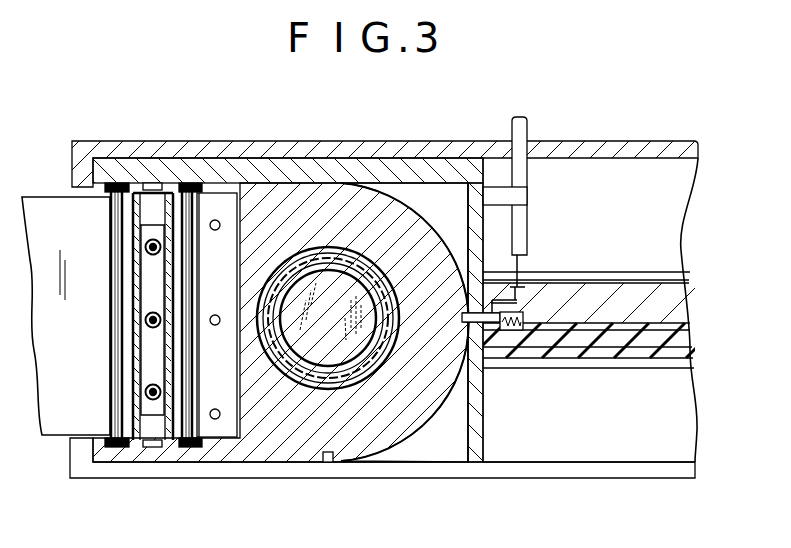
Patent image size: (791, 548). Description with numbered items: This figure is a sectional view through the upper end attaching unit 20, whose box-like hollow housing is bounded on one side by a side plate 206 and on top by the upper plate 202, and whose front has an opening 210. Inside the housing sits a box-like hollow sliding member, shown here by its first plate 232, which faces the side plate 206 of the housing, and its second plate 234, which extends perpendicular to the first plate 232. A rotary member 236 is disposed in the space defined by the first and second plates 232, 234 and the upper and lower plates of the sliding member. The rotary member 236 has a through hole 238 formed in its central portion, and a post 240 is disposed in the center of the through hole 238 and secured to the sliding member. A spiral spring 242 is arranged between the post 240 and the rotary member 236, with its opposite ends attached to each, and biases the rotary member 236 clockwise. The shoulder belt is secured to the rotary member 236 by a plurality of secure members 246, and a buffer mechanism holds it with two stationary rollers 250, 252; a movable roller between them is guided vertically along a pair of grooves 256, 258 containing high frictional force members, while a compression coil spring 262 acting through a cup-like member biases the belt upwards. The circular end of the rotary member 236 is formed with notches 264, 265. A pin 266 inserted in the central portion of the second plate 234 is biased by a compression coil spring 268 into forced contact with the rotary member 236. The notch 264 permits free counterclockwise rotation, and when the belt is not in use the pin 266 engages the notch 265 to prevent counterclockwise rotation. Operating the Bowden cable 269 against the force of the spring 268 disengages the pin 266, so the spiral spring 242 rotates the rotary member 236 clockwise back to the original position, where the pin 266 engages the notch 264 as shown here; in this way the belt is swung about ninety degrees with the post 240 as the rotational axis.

The upper end attaching unit 20 is at (598, 138).
The upper plate 202 is at (403, 472).
The side plate 206 is at (192, 152).
The opening 210 is at (586, 472).
The first plate 232 is at (231, 170).
The second plate 234 is at (475, 462).
The rotary member 236 is at (263, 452).
The through hole 238 is at (292, 252).
The post 240 is at (323, 287).
The spiral spring 242 is at (362, 262).
The secure members 246 is at (270, 176).
The stationary roller 250 is at (113, 447).
The stationary roller 252 is at (190, 447).
The groove 256 is at (152, 183).
The groove 258 is at (148, 448).
The compression coil spring 262 is at (147, 392).
The notch 264 is at (462, 345).
The notch 265 is at (325, 463).
The pin 266 is at (490, 330).
The compression coil spring 268 is at (508, 333).
The Bowden cable 269 is at (517, 128).